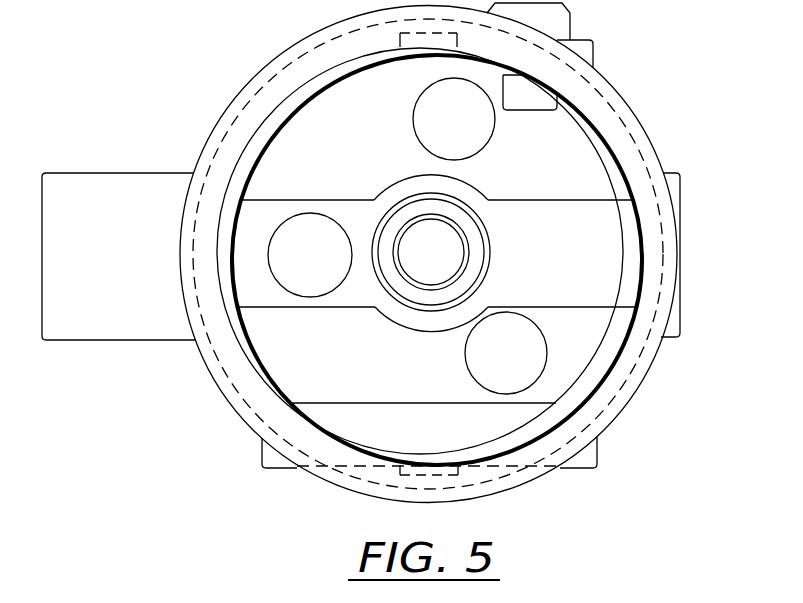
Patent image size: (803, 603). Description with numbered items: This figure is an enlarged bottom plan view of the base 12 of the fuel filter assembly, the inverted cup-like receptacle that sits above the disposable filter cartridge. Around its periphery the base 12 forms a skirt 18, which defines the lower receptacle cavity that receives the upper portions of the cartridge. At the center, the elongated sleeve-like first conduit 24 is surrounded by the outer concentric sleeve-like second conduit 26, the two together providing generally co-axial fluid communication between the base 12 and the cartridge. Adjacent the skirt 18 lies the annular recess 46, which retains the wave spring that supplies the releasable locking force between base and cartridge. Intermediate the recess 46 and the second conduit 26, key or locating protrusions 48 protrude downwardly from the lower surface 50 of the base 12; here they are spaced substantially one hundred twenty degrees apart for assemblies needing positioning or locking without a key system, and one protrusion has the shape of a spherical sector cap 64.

The base 12 is at (196, 88).
The skirt 18 is at (651, 141).
The first conduit 24 is at (463, 238).
The second conduit 26 is at (488, 262).
The annular recess 46 is at (583, 120).
The key/locating protrusions 48 is at (417, 106).
The lower surface 50 is at (342, 177).
The spherical sector cap 64 is at (487, 143).